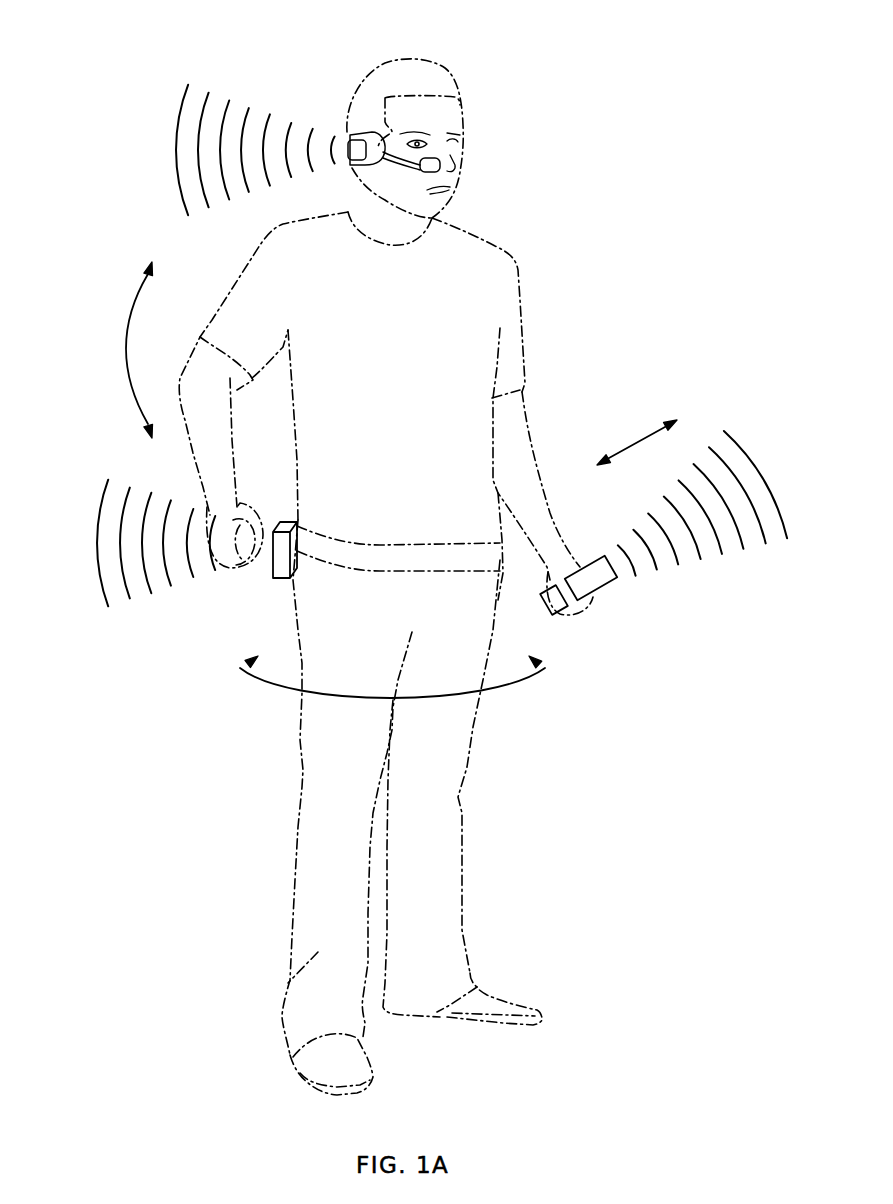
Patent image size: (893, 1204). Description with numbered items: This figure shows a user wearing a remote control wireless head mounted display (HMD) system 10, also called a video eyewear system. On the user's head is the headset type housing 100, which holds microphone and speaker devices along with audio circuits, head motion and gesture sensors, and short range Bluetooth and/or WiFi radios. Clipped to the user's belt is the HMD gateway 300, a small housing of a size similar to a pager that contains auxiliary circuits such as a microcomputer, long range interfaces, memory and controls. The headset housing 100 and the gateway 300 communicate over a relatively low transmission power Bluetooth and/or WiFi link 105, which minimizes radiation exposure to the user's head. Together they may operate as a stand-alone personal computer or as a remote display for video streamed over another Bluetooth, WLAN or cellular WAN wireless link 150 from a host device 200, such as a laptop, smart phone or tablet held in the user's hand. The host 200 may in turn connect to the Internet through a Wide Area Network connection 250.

The remote control wireless head mounted display (HMD) system 10 is at (399, 566).
The headset type housing 100 is at (308, 150).
The Bluetooth and/or WiFi link 105 is at (98, 350).
The Bluetooth and/or WiFi link 150 is at (411, 698).
The host device 200 is at (663, 535).
The Wide Area Network (WAN) connection 250 is at (627, 428).
The HMD gateway 300 is at (197, 552).